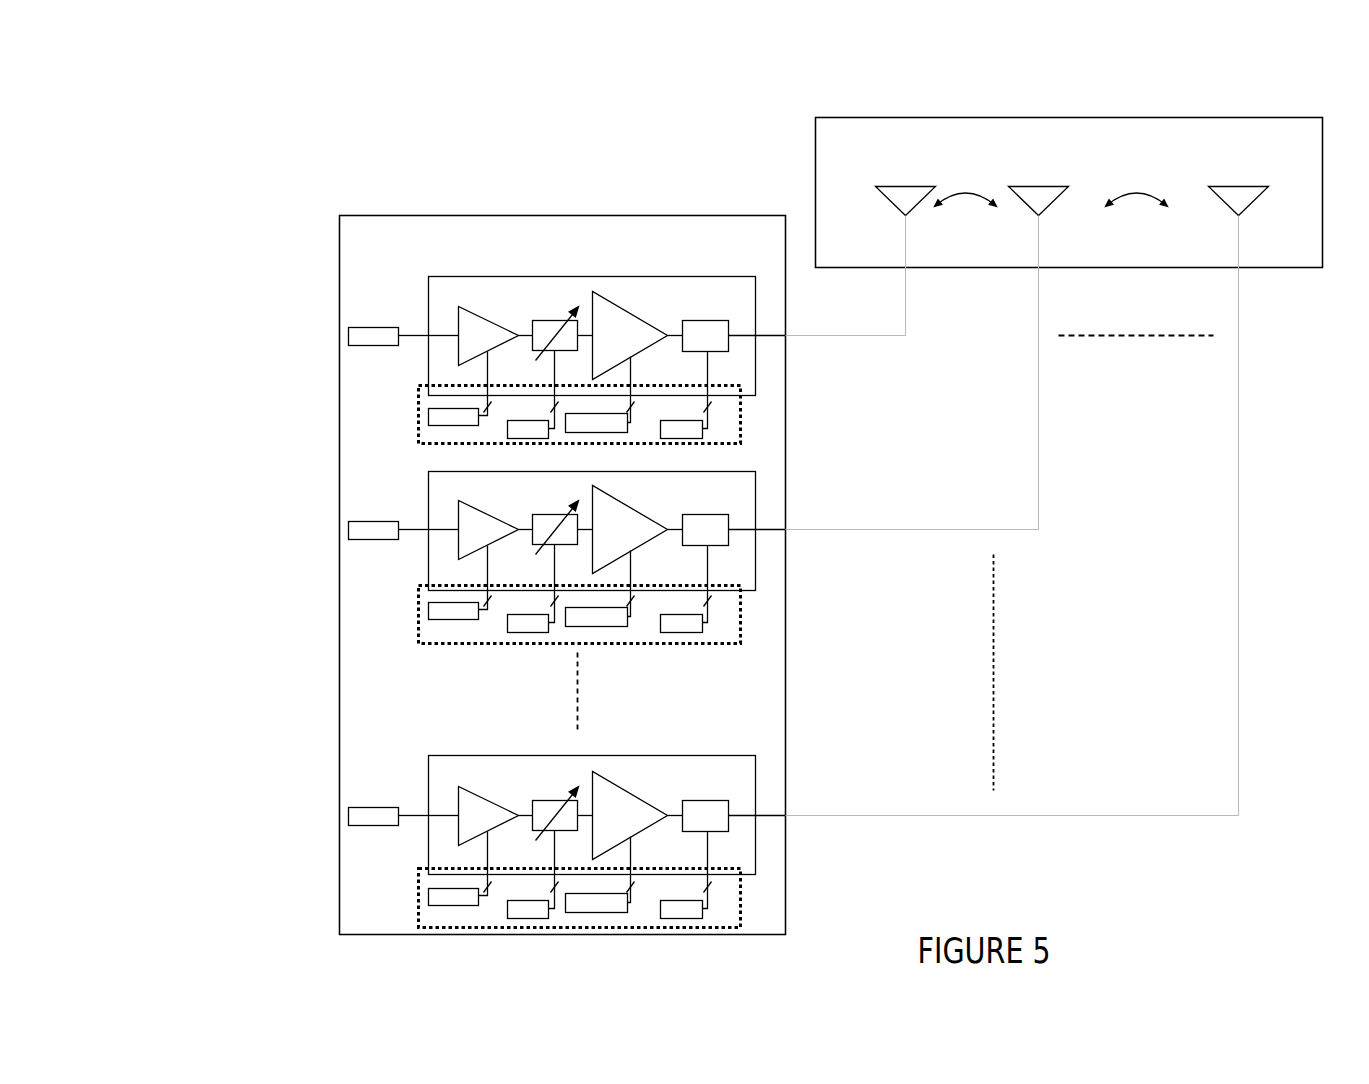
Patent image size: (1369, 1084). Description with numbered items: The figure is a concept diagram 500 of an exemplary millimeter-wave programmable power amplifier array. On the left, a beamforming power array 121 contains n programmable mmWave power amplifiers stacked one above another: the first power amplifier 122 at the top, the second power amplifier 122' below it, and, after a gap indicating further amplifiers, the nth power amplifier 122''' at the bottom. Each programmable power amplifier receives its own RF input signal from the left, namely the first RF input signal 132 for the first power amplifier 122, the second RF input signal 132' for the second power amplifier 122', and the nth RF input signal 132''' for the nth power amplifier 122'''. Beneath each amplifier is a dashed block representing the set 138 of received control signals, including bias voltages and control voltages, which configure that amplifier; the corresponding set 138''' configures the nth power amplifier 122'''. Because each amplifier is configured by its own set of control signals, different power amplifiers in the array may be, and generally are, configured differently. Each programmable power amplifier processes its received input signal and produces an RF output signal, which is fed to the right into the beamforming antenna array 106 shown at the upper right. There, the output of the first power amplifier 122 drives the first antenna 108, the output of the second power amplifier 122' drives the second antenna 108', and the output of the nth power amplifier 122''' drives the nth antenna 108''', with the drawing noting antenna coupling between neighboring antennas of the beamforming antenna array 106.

The mmWave programmable power amplifier array concept diagram 500 is at (184, 55).
The beamforming power array 121 is at (577, 216).
The programmable mmWave power amplifier PA1 122 is at (502, 298).
The programmable mmWave power amplifier PA2 122' is at (734, 539).
The programmable mmWave power amplifier PAn 122''' is at (834, 824).
The RF input signal RFin 1 132 is at (389, 321).
The RF input signal RFin 2 132' is at (389, 515).
The RF input signal RFin n 132''' is at (389, 801).
The set of received control signals 138 is at (551, 515).
The set of received control signals for PAn 138''' is at (548, 898).
The beamforming antenna array 106 is at (817, 177).
The antenna 1 108 is at (887, 261).
The antenna 2 108' is at (1046, 358).
The antenna N 108''' is at (1251, 501).